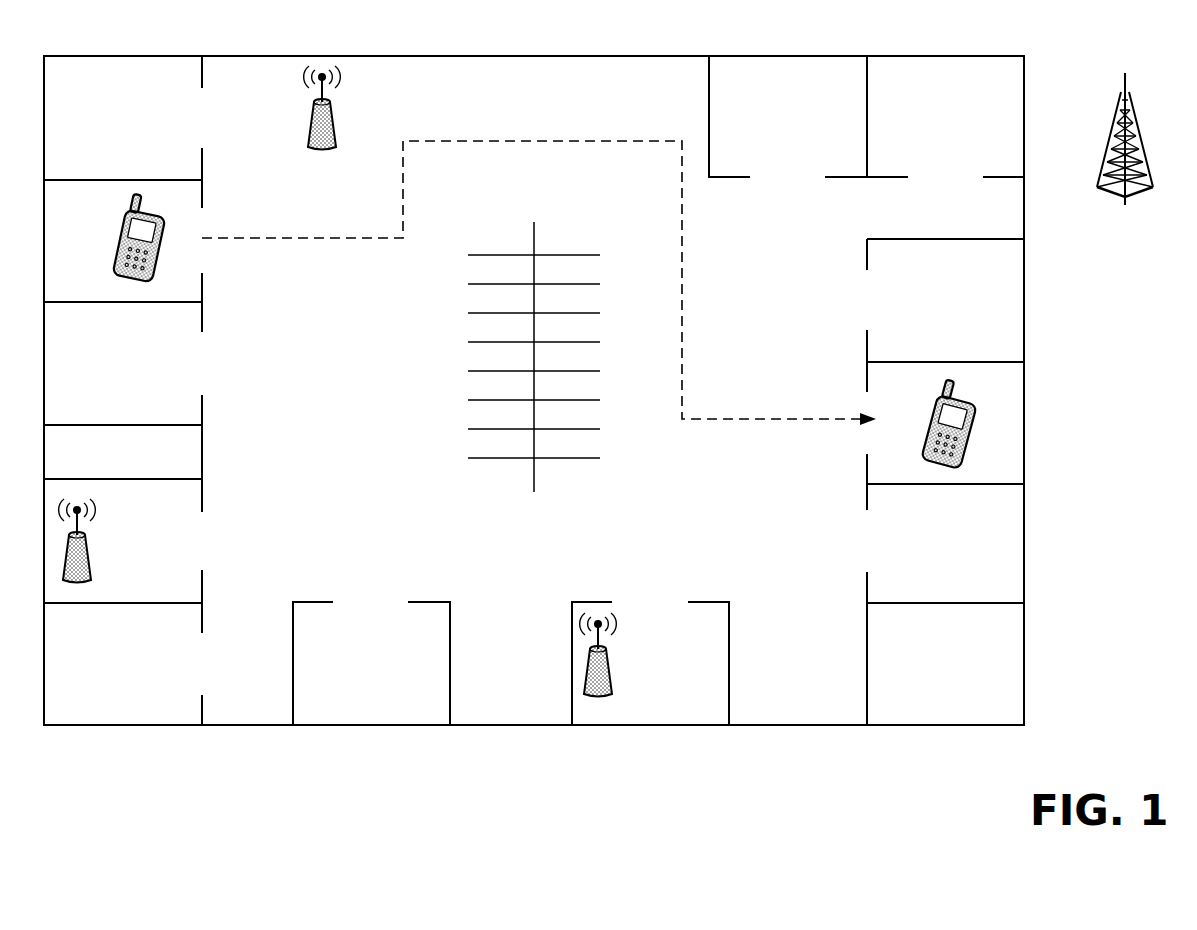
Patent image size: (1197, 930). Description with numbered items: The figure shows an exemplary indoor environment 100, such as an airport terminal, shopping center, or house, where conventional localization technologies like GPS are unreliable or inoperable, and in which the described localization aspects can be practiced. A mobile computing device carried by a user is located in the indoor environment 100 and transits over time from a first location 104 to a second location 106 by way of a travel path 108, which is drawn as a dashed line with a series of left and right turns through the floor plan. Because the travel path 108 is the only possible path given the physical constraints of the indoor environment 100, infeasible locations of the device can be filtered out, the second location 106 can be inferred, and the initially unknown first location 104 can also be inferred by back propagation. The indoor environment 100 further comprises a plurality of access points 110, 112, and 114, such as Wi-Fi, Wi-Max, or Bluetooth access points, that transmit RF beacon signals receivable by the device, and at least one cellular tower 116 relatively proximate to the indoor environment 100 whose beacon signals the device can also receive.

The indoor environment 100 is at (1082, 297).
The first location 104 is at (97, 221).
The second location 106 is at (912, 461).
The travel path 108 is at (553, 141).
The access point 110 is at (88, 548).
The access point 112 is at (333, 122).
The access point 114 is at (610, 664).
The cellular tower 116 is at (1119, 100).